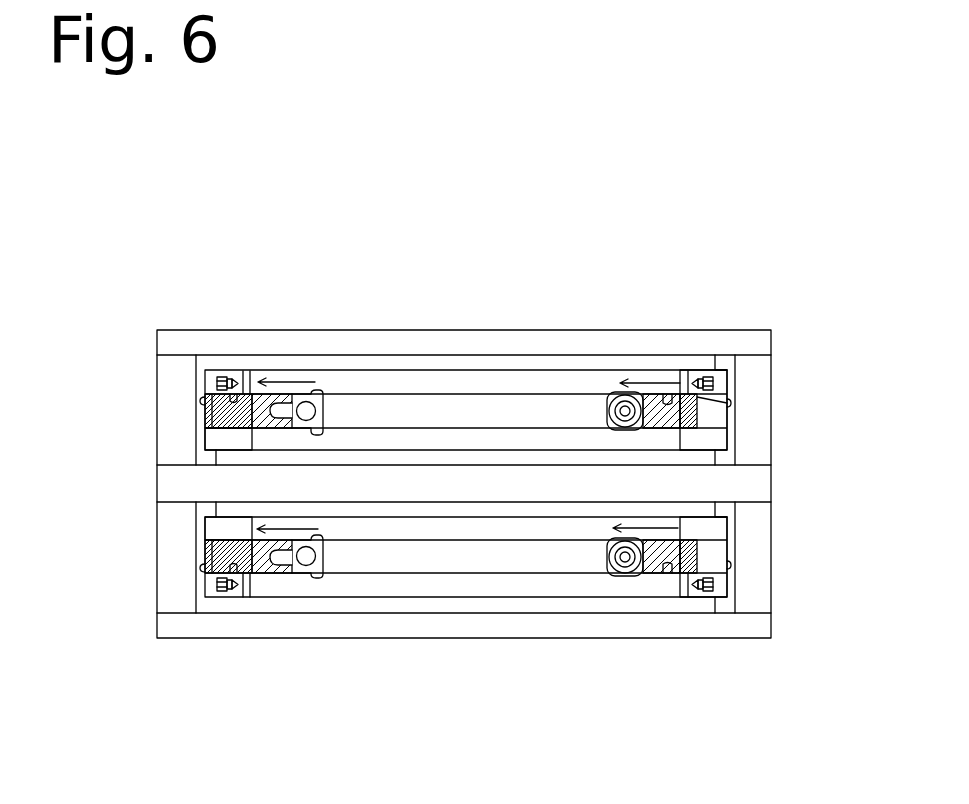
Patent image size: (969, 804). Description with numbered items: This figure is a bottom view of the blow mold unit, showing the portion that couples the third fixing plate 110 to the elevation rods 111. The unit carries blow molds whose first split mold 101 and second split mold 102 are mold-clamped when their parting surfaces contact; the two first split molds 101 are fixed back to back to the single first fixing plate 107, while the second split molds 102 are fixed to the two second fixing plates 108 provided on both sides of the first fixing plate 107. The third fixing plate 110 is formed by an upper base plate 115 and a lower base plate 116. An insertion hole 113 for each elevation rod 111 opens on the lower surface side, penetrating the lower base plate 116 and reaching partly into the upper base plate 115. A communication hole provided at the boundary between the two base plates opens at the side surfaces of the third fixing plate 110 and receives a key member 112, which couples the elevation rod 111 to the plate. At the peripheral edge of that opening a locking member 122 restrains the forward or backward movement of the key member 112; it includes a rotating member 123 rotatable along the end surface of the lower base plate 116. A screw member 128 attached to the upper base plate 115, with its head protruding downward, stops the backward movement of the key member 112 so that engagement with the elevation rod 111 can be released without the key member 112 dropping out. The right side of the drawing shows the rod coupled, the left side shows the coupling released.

The first split mold 101 is at (750, 437).
The second split mold 102 is at (765, 368).
The first fixing plate 107 is at (750, 483).
The second fixing plate 108 is at (757, 346).
The third fixing plate 110 is at (96, 422).
The elevation rod 111 is at (590, 700).
The key member 112 is at (300, 660).
The insertion hole 113 is at (307, 408).
The upper base plate 115 is at (217, 439).
The lower base plate 116 is at (277, 443).
The locking member 122 is at (233, 360).
The rotating member 123 is at (737, 405).
The screw member 128 is at (203, 402).